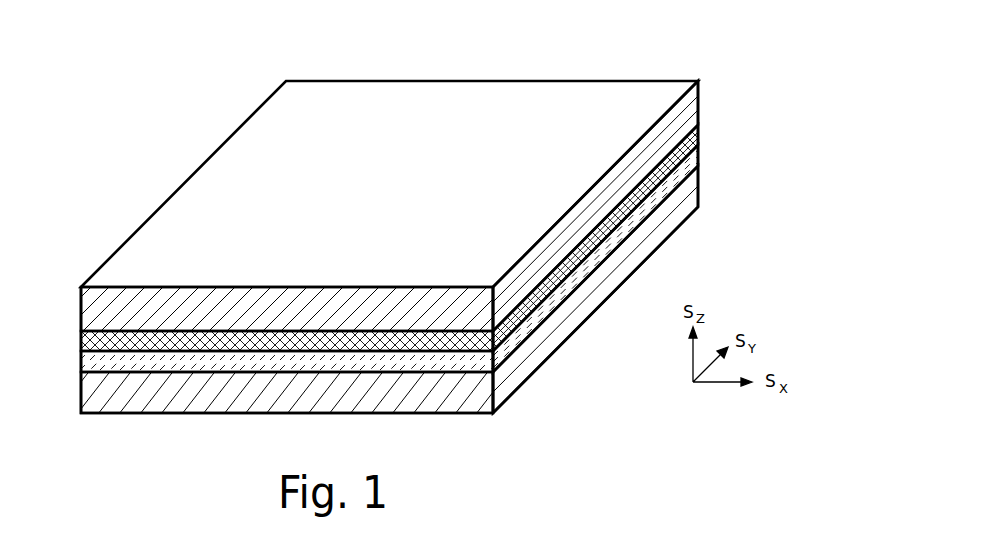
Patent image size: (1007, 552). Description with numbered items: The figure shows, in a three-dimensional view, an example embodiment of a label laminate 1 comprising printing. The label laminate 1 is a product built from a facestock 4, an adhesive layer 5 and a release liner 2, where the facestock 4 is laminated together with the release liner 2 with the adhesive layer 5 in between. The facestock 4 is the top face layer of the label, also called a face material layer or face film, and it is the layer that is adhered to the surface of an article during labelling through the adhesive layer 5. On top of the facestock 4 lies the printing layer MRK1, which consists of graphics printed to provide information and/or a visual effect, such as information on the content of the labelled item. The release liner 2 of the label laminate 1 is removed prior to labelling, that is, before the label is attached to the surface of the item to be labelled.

The label laminate 1 is at (452, 60).
The printing layer MRK1 is at (280, 176).
The facestock 4 is at (80, 307).
The adhesive layer 5 is at (80, 338).
The release liner 2 is at (72, 350).